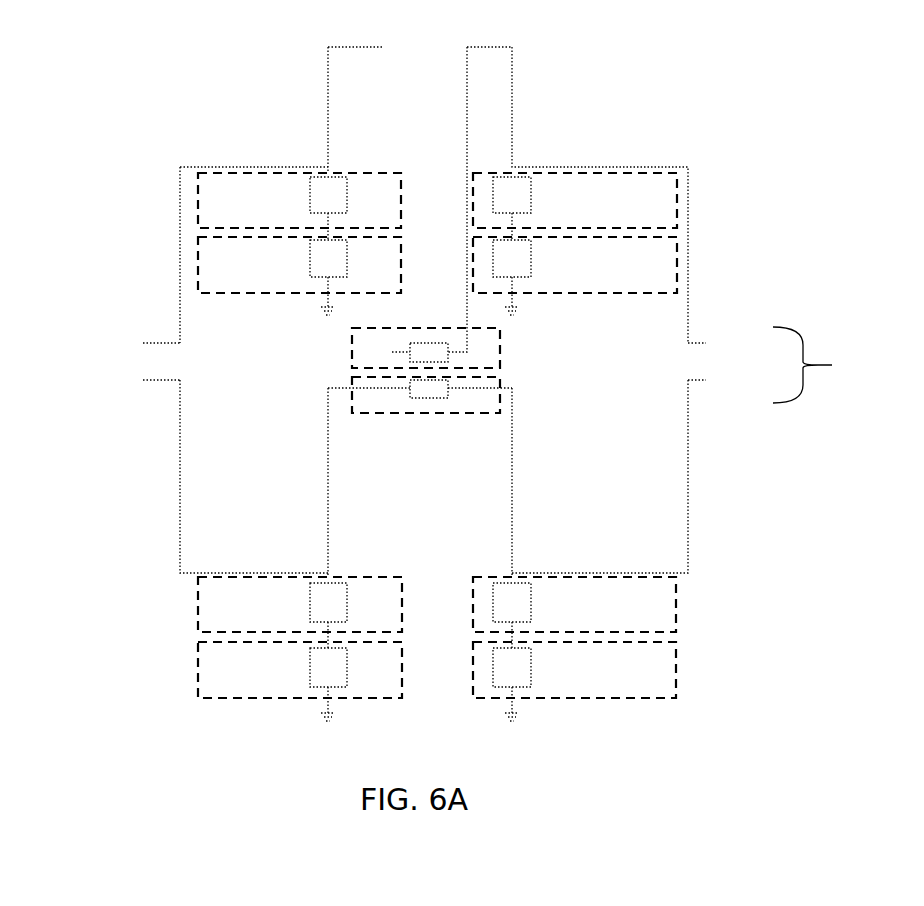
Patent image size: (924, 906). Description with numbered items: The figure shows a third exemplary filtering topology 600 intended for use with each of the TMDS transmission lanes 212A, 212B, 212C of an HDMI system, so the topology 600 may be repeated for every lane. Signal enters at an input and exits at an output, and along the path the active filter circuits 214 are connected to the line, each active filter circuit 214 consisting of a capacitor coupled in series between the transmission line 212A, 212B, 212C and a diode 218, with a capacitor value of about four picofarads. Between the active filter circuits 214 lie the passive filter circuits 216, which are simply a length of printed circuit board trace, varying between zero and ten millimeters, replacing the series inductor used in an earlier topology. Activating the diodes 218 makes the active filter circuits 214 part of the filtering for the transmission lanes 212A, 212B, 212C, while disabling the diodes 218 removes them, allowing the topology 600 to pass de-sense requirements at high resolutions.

The filtering topology 600 is at (490, 378).
The active filter circuit 214 is at (197, 203).
The diode 218 is at (197, 262).
The passive filter circuit 216 is at (501, 352).
The TMDS transmission lane 212A is at (832, 365).
The TMDS transmission lane 212B is at (868, 380).
The TMDS transmission lane 212C is at (866, 395).